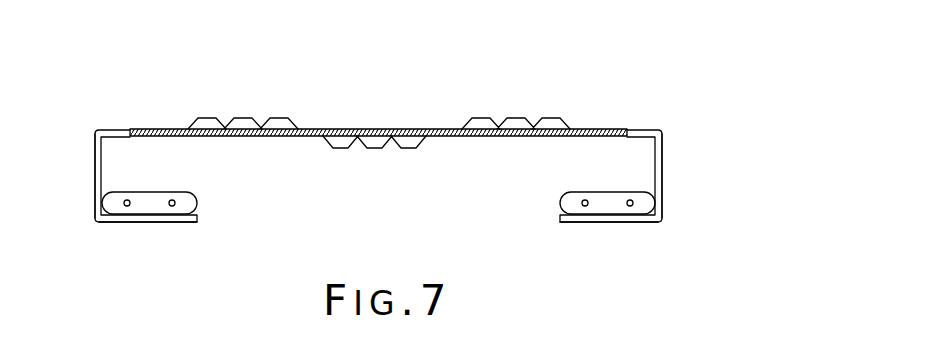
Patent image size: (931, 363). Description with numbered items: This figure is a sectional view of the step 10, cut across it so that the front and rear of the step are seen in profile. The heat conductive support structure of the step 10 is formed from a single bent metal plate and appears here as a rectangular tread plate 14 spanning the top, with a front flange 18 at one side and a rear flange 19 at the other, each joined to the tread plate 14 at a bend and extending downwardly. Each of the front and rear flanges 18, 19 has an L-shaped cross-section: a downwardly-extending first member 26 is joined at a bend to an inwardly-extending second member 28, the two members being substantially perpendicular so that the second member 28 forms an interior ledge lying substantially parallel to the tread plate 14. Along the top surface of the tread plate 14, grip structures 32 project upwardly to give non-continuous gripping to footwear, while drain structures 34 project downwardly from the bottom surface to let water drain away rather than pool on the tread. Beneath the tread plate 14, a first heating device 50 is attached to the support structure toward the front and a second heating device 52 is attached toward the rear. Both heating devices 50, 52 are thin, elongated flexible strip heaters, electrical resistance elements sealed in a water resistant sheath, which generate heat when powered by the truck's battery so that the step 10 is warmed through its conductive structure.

The step 10 is at (399, 154).
The tread plate 14 is at (150, 129).
The front flange 18 is at (85, 203).
The rear flange 19 is at (672, 207).
The first member 26 is at (95, 173).
The second member 28 is at (145, 222).
The grip structures 32 is at (225, 103).
The drain structures 34 is at (378, 158).
The first heating device 50 is at (165, 191).
The second heating device 52 is at (605, 191).